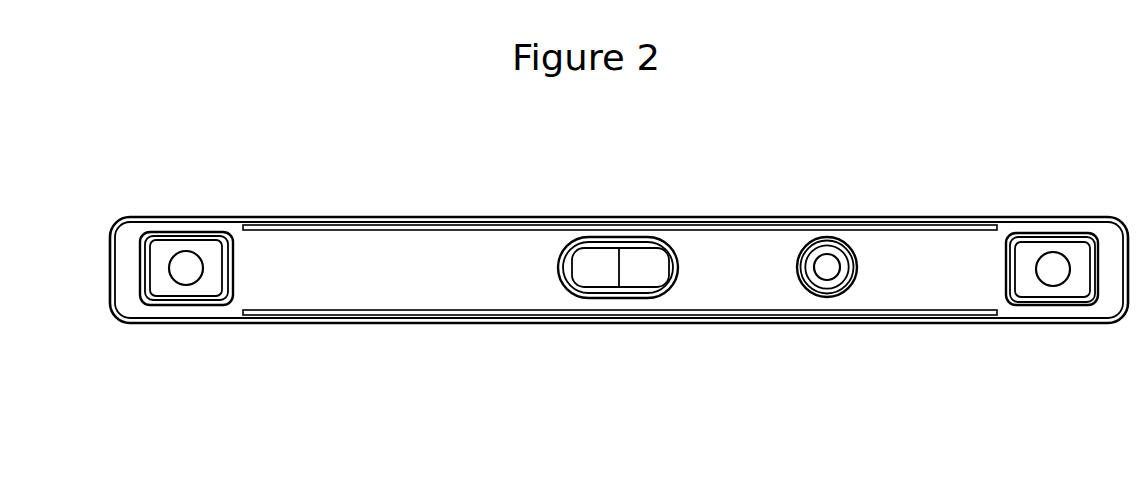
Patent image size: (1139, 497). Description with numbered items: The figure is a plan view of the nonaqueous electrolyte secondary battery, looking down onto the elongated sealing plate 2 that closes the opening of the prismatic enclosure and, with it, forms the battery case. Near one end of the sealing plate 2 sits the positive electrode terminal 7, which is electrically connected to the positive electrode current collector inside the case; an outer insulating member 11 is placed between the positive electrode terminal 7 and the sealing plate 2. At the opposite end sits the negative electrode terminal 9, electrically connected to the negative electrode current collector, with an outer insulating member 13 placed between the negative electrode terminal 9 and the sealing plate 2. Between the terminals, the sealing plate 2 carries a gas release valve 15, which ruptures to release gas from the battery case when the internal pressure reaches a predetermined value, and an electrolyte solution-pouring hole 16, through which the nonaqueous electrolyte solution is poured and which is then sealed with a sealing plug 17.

The sealing plate 2 is at (735, 280).
The positive electrode terminal 7 is at (1053, 285).
The negative electrode terminal 9 is at (186, 283).
The outer insulating member 11 is at (1053, 237).
The outer insulating member 13 is at (197, 236).
The gas release valve 15 is at (600, 275).
The electrolyte solution-pouring hole 16 is at (830, 292).
The sealing plug 17 is at (827, 265).